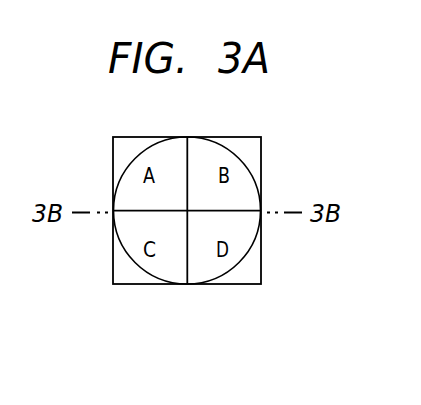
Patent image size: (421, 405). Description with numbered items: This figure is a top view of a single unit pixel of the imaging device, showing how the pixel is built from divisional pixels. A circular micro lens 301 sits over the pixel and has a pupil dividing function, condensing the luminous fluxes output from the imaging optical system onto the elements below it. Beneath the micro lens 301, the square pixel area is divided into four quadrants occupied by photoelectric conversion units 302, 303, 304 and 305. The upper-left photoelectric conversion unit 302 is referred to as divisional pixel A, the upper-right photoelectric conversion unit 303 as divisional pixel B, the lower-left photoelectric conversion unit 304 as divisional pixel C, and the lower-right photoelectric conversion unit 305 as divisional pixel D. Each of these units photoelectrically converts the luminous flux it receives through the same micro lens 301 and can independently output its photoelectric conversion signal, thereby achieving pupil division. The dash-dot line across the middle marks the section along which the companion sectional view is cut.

The micro lens 301 is at (235, 152).
The photoelectric conversion unit 302 is at (138, 193).
The photoelectric conversion unit 303 is at (223, 193).
The photoelectric conversion unit 304 is at (158, 267).
The photoelectric conversion unit 305 is at (217, 266).